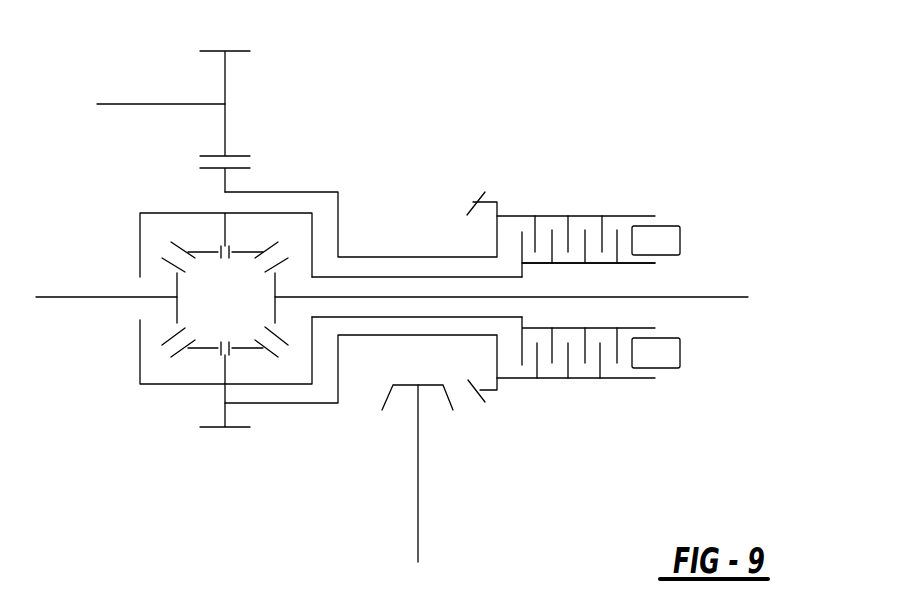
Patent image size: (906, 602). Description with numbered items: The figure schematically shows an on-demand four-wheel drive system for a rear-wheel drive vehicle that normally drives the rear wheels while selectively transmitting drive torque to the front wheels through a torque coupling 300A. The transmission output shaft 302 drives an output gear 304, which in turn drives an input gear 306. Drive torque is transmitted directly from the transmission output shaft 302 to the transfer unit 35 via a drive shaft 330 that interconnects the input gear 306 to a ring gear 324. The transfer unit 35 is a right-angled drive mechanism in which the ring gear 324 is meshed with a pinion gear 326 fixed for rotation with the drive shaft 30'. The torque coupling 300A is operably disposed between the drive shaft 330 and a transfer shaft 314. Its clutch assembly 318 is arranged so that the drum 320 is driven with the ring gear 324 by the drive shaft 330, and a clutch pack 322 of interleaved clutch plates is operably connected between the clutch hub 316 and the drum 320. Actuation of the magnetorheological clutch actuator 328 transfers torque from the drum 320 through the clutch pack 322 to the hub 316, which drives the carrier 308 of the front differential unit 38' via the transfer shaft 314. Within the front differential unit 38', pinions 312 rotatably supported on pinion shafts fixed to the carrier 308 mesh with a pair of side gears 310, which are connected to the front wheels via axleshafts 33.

The axleshafts 33 is at (70, 297).
The transmission output shaft 302 is at (120, 103).
The output gear 304 is at (215, 50).
The input gear 306 is at (237, 430).
The carrier 308 is at (181, 212).
The side gears 310 is at (275, 312).
The pinions 312 is at (237, 249).
The transfer shaft 314 is at (366, 277).
The clutch hub 316 is at (568, 264).
The clutch assembly 318 is at (638, 210).
The drum 320 is at (583, 378).
The clutch pack 322 is at (577, 222).
The ring gear 324 is at (470, 196).
The pinion gear 326 is at (412, 385).
The magnetorheological clutch actuator 328 is at (706, 232).
The drive shaft 330 is at (423, 337).
The torque coupling 300A is at (638, 262).
The transfer unit 35 is at (449, 455).
The front differential unit 38' is at (101, 376).
The drive shaft 30' is at (457, 473).